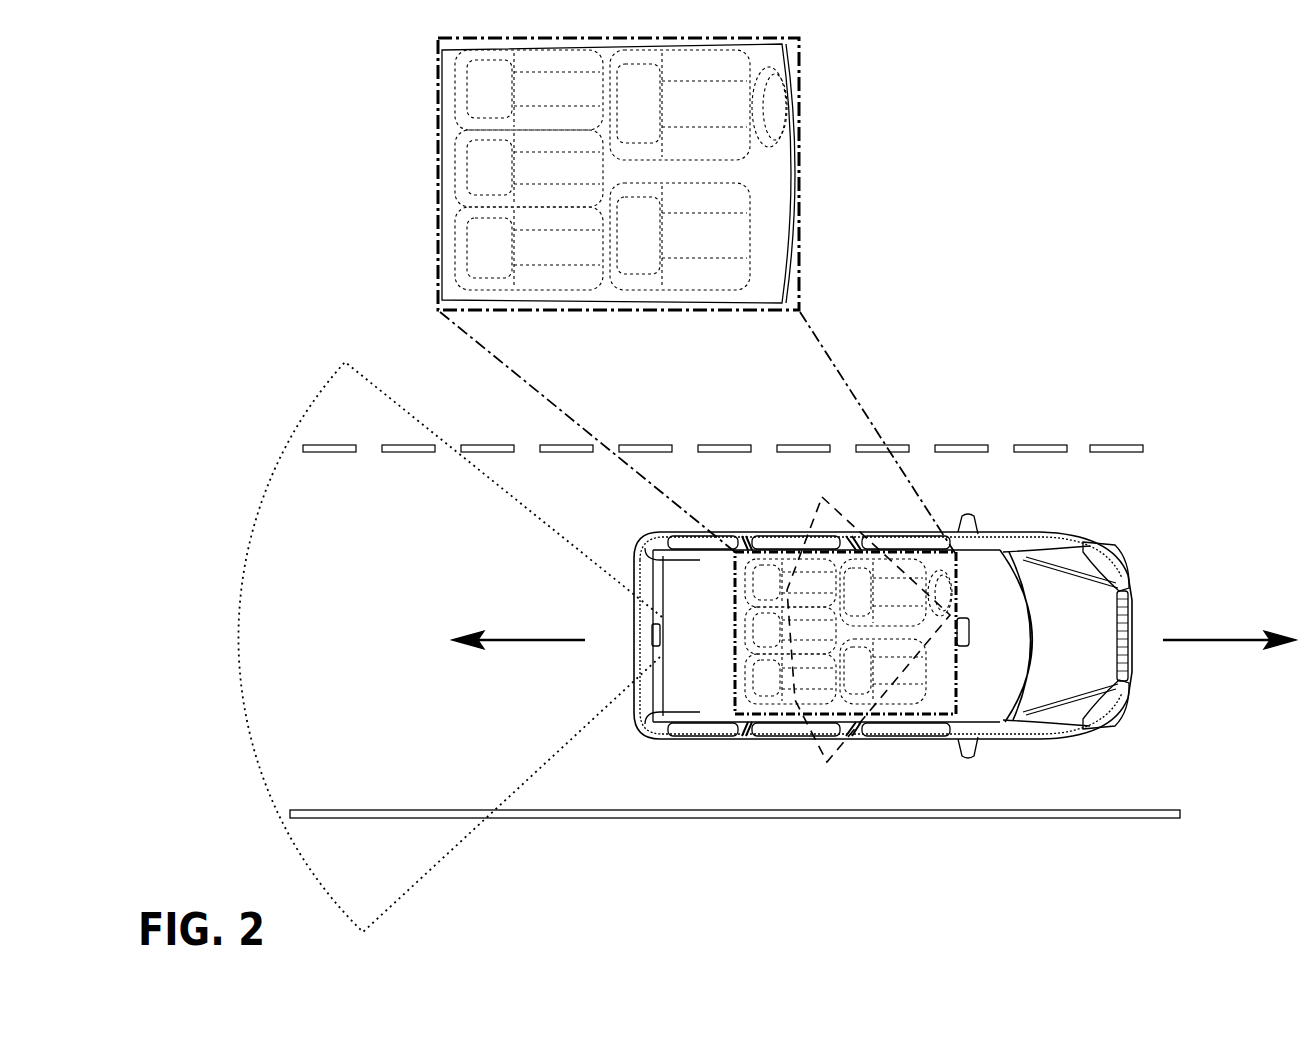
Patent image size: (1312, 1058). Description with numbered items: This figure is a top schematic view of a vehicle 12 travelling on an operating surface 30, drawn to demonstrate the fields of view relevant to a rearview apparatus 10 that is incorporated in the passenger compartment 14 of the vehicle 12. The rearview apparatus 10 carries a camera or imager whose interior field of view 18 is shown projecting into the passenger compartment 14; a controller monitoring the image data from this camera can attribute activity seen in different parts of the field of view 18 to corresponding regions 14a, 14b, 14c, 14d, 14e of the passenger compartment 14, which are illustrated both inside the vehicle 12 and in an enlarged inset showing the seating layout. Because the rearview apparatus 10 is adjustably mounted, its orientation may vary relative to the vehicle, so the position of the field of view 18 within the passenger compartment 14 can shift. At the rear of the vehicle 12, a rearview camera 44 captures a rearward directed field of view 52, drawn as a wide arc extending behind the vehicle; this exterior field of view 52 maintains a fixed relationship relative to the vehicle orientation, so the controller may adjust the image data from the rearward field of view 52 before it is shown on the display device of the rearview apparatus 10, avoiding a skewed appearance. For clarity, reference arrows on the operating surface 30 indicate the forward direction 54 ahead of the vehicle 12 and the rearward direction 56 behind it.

The rearview apparatus 10 is at (976, 632).
The vehicle 12 is at (1087, 649).
The passenger compartment 14 is at (748, 414).
The region of the passenger compartment 14a is at (722, 128).
The region of the passenger compartment 14b is at (722, 257).
The region of the passenger compartment 14c is at (563, 95).
The region of the passenger compartment 14d is at (563, 185).
The region of the passenger compartment 14e is at (563, 279).
The field of view 18 is at (880, 550).
The operating surface 30 is at (390, 654).
The rearview camera 44 is at (652, 637).
The rearward directed field of view 52 is at (487, 465).
The forward direction 54 is at (1220, 642).
The rearward direction 56 is at (523, 642).